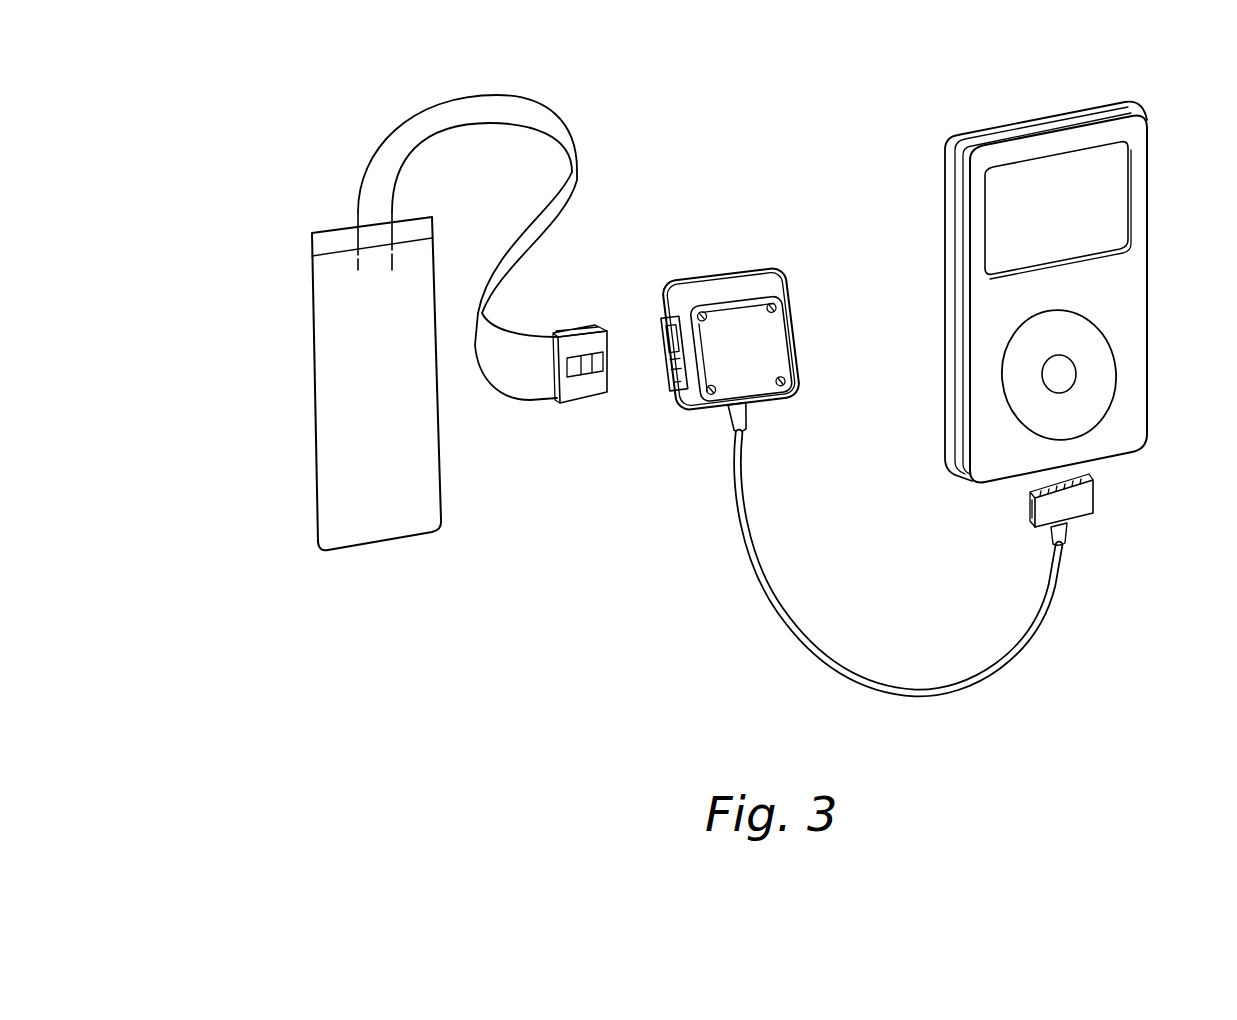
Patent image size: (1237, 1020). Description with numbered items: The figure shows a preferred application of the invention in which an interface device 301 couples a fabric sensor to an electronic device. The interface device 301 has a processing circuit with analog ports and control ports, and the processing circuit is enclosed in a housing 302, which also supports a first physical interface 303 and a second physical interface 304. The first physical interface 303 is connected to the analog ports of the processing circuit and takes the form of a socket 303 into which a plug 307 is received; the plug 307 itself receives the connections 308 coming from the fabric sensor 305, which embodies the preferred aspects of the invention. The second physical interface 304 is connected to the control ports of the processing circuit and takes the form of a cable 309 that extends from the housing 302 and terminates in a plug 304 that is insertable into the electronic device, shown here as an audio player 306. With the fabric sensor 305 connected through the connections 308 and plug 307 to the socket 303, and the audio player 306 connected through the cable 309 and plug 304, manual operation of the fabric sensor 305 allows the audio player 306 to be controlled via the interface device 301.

The interface device 301 is at (770, 205).
The housing 302 is at (780, 347).
The first physical interface 303 is at (662, 388).
The second physical interface 304 is at (1080, 503).
The fabric sensor 305 is at (333, 437).
The audio player 306 is at (1128, 288).
The plug 307 is at (578, 347).
The connections 308 is at (528, 378).
The cable 309 is at (778, 610).